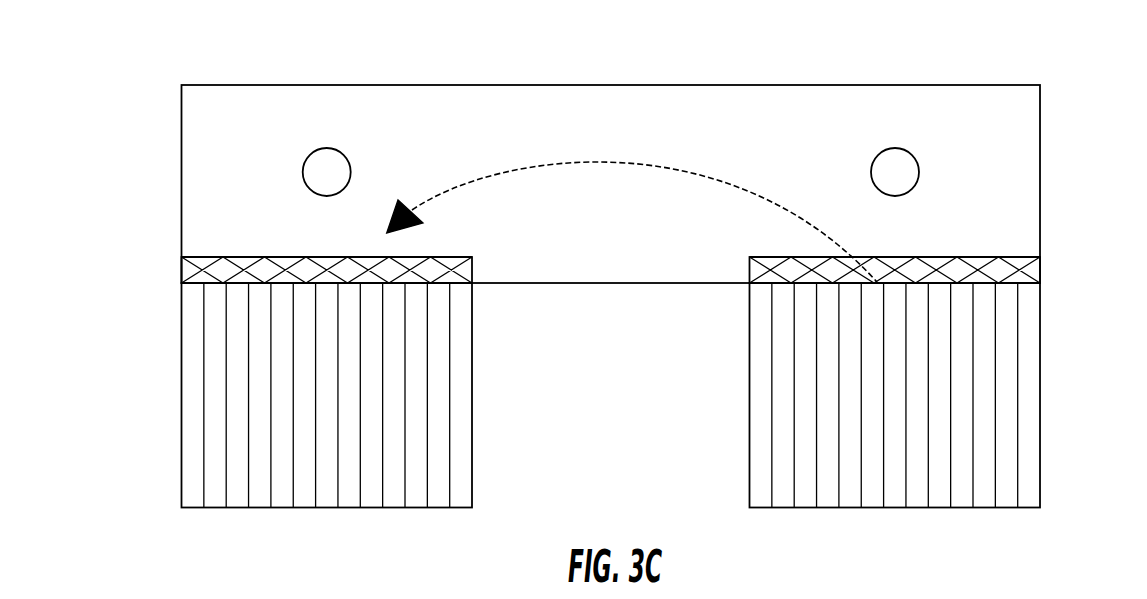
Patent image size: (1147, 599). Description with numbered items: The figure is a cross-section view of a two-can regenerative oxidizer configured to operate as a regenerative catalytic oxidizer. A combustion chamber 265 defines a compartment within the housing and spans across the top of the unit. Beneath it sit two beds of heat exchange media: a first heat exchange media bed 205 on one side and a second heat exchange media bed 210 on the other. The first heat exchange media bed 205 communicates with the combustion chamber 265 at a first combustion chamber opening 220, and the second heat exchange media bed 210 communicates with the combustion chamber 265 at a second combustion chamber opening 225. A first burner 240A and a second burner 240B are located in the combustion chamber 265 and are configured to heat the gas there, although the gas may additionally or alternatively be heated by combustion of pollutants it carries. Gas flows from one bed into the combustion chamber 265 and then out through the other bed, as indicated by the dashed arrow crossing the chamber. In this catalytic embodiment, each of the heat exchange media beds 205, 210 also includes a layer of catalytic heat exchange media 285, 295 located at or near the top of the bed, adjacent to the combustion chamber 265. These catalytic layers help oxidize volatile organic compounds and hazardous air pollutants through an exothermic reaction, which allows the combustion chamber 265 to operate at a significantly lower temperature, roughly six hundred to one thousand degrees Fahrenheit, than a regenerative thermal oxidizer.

The first heat exchange media bed 205 is at (258, 358).
The second heat exchange media bed 210 is at (977, 343).
The first combustion chamber opening 220 is at (237, 278).
The second combustion chamber opening 225 is at (982, 282).
The first burner 240A is at (327, 148).
The second burner 240B is at (895, 148).
The combustion chamber 265 is at (237, 170).
The catalytic heat exchange media 285 is at (270, 257).
The catalytic heat exchange media 295 is at (947, 255).